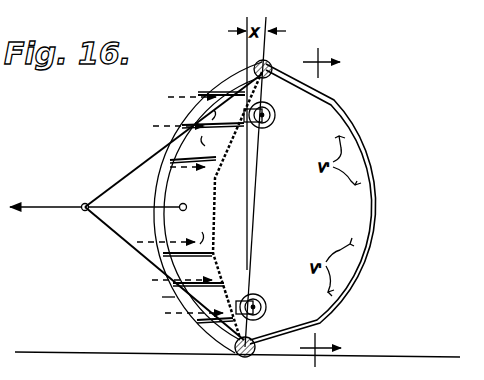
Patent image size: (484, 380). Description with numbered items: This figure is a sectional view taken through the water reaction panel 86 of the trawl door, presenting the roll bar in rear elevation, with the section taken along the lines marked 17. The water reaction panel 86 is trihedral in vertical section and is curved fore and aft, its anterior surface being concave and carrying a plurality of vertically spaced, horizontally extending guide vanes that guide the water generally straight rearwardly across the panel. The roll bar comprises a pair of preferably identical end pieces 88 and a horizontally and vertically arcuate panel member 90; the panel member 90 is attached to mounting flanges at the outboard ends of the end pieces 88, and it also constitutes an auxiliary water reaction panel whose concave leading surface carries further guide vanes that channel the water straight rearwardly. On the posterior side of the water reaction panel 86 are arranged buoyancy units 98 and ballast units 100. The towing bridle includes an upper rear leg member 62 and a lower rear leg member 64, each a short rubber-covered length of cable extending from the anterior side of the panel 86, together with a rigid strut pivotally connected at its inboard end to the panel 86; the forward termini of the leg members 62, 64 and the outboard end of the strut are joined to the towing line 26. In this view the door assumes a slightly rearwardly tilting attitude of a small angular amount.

The datum reference line 17 is at (317, 205).
The towing line 26 is at (35, 206).
The upper rear leg member 62 is at (146, 164).
The lower rear leg member 64 is at (90, 219).
The water reaction panel 86 is at (197, 199).
The end piece 88 is at (329, 88).
The panel member 90 is at (373, 223).
The buoyancy unit 98 is at (276, 122).
The ballast unit 100 is at (255, 294).